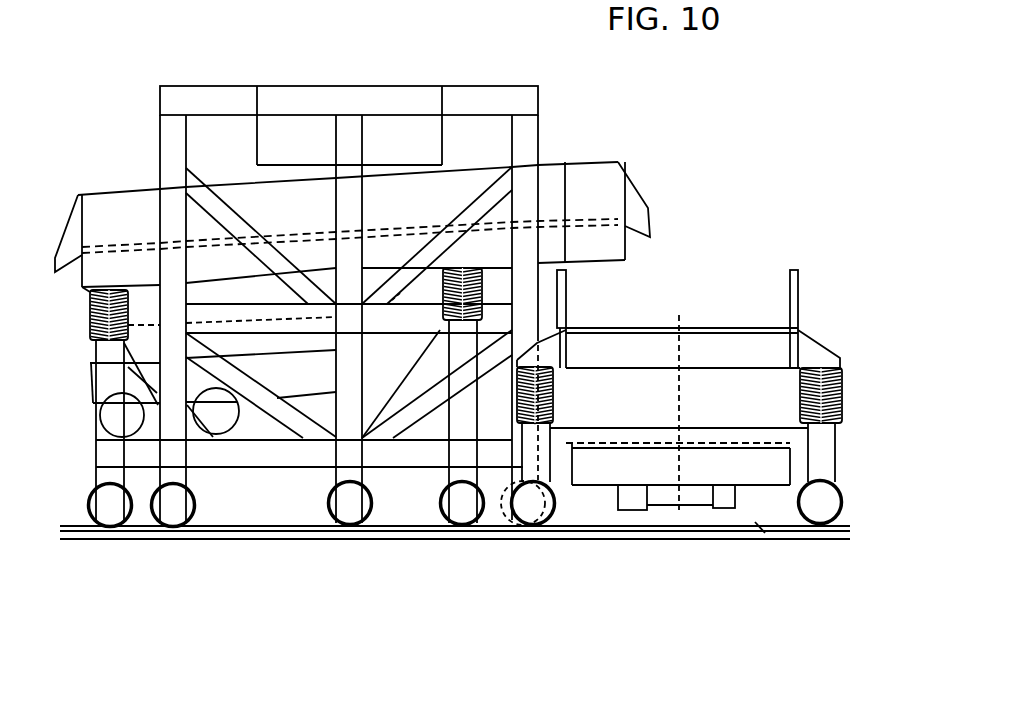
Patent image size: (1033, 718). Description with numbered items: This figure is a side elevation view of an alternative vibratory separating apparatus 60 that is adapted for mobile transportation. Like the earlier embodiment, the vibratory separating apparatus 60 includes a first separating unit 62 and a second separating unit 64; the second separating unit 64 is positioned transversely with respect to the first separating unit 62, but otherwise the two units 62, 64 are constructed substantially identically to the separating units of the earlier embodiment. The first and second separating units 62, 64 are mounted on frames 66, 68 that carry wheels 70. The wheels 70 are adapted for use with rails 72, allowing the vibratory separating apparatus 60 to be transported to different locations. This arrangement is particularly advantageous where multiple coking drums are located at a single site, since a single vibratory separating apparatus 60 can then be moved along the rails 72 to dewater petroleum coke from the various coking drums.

The vibratory separating apparatus 60 is at (125, 115).
The first separating unit 62 is at (448, 185).
The second separating unit 64 is at (732, 345).
The frame 66 is at (527, 140).
The frame 68 is at (540, 470).
The wheels 70 is at (92, 517).
The rails 72 is at (653, 528).